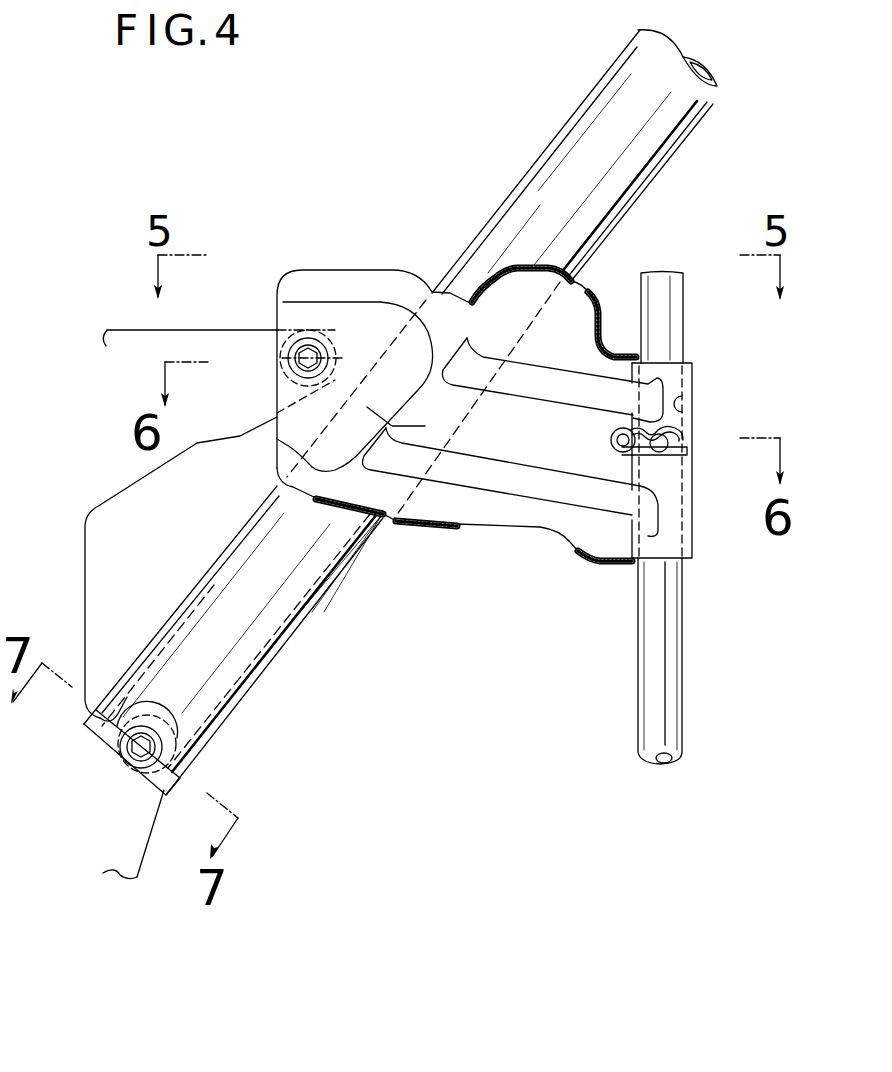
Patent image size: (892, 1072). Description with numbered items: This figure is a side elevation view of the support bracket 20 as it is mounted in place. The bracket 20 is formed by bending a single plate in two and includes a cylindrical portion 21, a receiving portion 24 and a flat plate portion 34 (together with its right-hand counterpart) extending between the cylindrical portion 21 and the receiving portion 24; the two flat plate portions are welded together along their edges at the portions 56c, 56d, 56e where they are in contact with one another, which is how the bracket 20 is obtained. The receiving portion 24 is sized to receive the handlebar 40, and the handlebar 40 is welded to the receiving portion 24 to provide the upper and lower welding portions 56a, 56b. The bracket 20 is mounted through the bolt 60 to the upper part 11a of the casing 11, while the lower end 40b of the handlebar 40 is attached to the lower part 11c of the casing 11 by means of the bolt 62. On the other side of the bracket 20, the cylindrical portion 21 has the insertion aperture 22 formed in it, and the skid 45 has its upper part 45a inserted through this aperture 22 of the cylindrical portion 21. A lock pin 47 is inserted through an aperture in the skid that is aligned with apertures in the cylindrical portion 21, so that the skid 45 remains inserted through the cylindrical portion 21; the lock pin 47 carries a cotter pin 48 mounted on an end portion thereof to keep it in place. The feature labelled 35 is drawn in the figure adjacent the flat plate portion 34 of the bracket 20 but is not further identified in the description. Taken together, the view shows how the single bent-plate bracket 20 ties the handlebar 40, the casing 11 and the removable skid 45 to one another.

The casing 11 is at (118, 326).
The upper part of the casing 11a is at (232, 330).
The lower part of the casing 11c is at (145, 810).
The bracket 20 is at (330, 268).
The cylindrical portion 21 is at (693, 377).
The insertion aperture 22 is at (692, 400).
The receiving portion 24 is at (500, 329).
The left flat plate portion 34 is at (540, 520).
The lower slot 35 is at (528, 440).
The handlebar 40 is at (600, 90).
The lower end of the handlebar 40b is at (127, 697).
The skid 45 is at (684, 677).
The upper part of the skid 45a is at (683, 604).
The lock pin 47 is at (664, 449).
The cotter pin 48 is at (617, 452).
The upper welding portion 56a is at (517, 263).
The lower welding portion 56b is at (375, 505).
The welded portion 56c is at (603, 323).
The welded portion 56d is at (437, 528).
The welded portion 56e is at (610, 567).
The bolt 60 is at (308, 347).
The bolt 62 is at (170, 746).